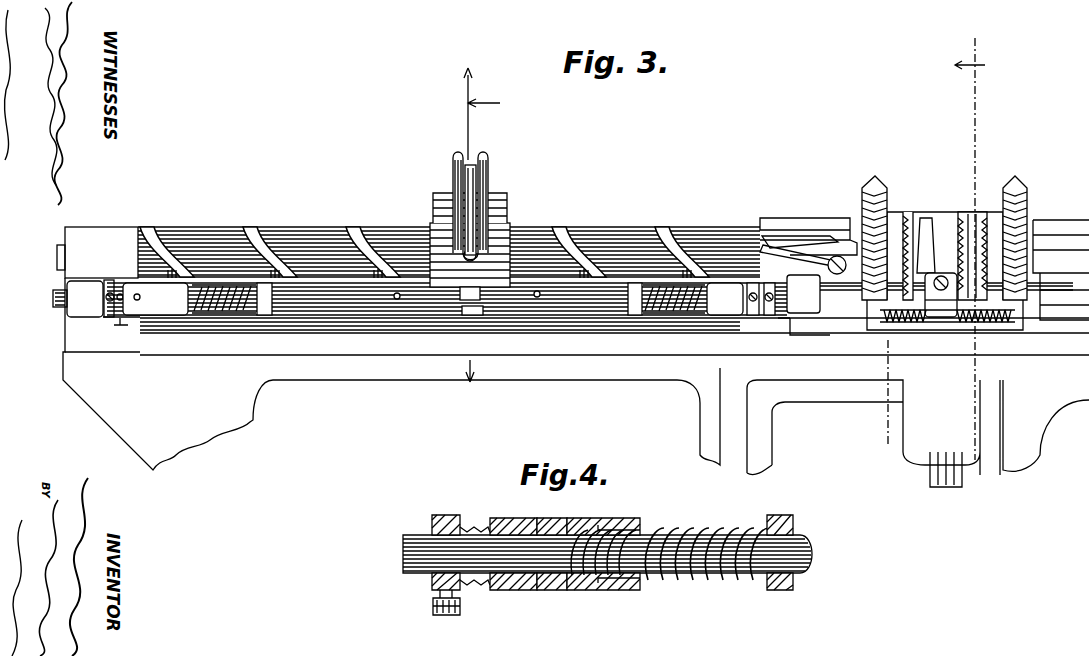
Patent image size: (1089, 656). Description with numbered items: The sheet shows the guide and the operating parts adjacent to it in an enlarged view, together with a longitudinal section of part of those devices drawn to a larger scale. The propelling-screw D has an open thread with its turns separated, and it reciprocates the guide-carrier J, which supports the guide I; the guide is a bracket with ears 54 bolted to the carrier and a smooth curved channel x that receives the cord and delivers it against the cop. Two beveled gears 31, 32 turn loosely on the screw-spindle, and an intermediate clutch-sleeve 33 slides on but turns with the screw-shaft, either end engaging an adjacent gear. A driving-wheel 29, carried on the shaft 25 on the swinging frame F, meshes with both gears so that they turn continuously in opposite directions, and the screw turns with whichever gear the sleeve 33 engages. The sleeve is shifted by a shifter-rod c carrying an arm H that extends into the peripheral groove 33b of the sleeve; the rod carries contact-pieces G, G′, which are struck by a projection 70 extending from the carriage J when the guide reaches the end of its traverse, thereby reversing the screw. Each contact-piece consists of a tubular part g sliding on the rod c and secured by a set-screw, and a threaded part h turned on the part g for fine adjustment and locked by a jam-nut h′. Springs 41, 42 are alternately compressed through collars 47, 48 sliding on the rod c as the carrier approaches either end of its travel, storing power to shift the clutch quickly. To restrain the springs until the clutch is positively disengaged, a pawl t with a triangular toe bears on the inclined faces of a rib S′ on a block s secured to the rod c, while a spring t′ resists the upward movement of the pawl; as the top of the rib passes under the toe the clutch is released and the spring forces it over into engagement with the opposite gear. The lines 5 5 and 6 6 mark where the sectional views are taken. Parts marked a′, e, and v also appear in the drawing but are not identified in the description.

In FIG. 3, the line 5 5 is at (933, 244).
In FIG. 3, the line 6 6 is at (481, 226).
In FIG. 3, the shaft 25 is at (955, 487).
In FIG. 3, the driving-wheel 29 is at (888, 340).
In FIG. 3, the beveled gear 31 is at (1018, 185).
In FIG. 3, the beveled gear 32 is at (868, 185).
In FIG. 3, the clutch-sleeve 33 is at (908, 215).
In FIG. 3, the peripheral groove 33b is at (948, 216).
In FIG. 3, the spring 41 is at (240, 304).
In FIG. 4, the spring 41 is at (720, 578).
In FIG. 3, the spring 42 is at (672, 304).
In FIG. 3, the collar 47 is at (268, 316).
In FIG. 4, the collar 47 is at (790, 590).
In FIG. 3, the collar 48 is at (635, 316).
In FIG. 3, the ears 54 is at (510, 203).
In FIG. 3, the projection 70 is at (468, 316).
In FIG. 3, the end block a′ is at (97, 252).
In FIG. 3, the shifter-rod c is at (400, 318).
In FIG. 4, the shifter-rod c is at (405, 550).
In FIG. 3, the propelling-screw D is at (449, 239).
In FIG. 3, the frame plate e is at (345, 320).
In FIG. 3, the frame F is at (762, 442).
In FIG. 3, the contact-piece G is at (155, 299).
In FIG. 4, the contact-piece G is at (603, 541).
In FIG. 3, the contact-piece G′ is at (725, 299).
In FIG. 4, the tubular part g is at (465, 533).
In FIG. 3, the arm H is at (941, 283).
In FIG. 4, the adjusting part h is at (562, 520).
In FIG. 4, the jam-nut h′ is at (515, 520).
In FIG. 3, the guide I is at (452, 163).
In FIG. 3, the guide-carrier J is at (508, 230).
In FIG. 3, the block s is at (795, 318).
In FIG. 3, the rib S′ is at (761, 319).
In FIG. 3, the pawl t is at (803, 294).
In FIG. 3, the spring t′ is at (803, 236).
In FIG. 3, the spring v is at (606, 298).
In FIG. 4, the spring v is at (597, 578).
In FIG. 3, the curved channel x is at (478, 162).